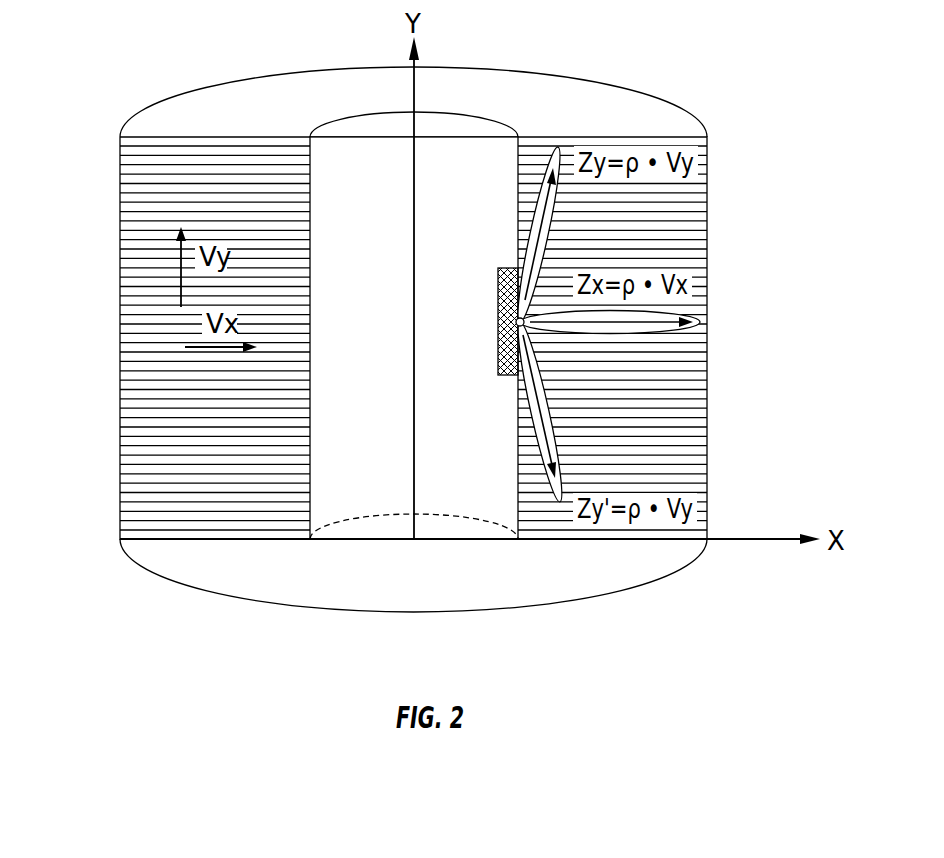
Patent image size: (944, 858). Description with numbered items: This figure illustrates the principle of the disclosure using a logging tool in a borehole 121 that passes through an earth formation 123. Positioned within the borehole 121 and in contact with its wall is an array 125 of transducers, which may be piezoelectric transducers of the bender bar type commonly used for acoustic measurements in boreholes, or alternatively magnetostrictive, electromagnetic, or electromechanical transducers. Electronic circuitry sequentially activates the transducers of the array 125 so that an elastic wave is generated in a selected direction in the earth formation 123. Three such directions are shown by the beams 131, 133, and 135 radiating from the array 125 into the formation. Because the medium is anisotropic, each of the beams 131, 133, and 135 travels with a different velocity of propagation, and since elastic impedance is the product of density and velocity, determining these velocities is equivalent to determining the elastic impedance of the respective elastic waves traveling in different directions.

The borehole 121 is at (457, 488).
The earth formation 123 is at (150, 468).
The array of transducers 125 is at (498, 282).
The beam 131 is at (528, 251).
The beam 133 is at (698, 322).
The beam 135 is at (540, 437).